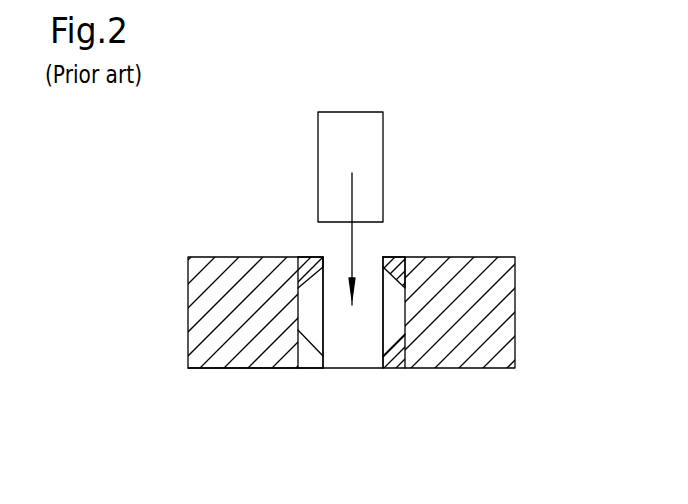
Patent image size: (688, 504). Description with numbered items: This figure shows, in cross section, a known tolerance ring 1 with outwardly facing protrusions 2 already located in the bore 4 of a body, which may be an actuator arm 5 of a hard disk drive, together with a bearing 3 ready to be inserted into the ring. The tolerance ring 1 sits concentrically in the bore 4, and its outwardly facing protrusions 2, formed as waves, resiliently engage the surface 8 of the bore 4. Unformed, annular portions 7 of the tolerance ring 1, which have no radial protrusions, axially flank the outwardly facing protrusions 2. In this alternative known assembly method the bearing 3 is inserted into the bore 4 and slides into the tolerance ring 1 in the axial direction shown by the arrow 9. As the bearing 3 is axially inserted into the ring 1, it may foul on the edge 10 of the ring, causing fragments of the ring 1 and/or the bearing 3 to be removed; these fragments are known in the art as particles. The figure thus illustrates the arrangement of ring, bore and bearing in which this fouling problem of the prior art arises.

The tolerance ring 1 is at (332, 252).
The outwardly facing protrusions 2 is at (407, 300).
The bearing 3 is at (394, 145).
The bore 4 is at (344, 252).
The actuator arm 5 is at (495, 320).
The unformed annular portions 7 is at (322, 268).
The surface of the bore 8 is at (323, 411).
The arrow 9 is at (350, 240).
The edge of the ring 10 is at (405, 242).